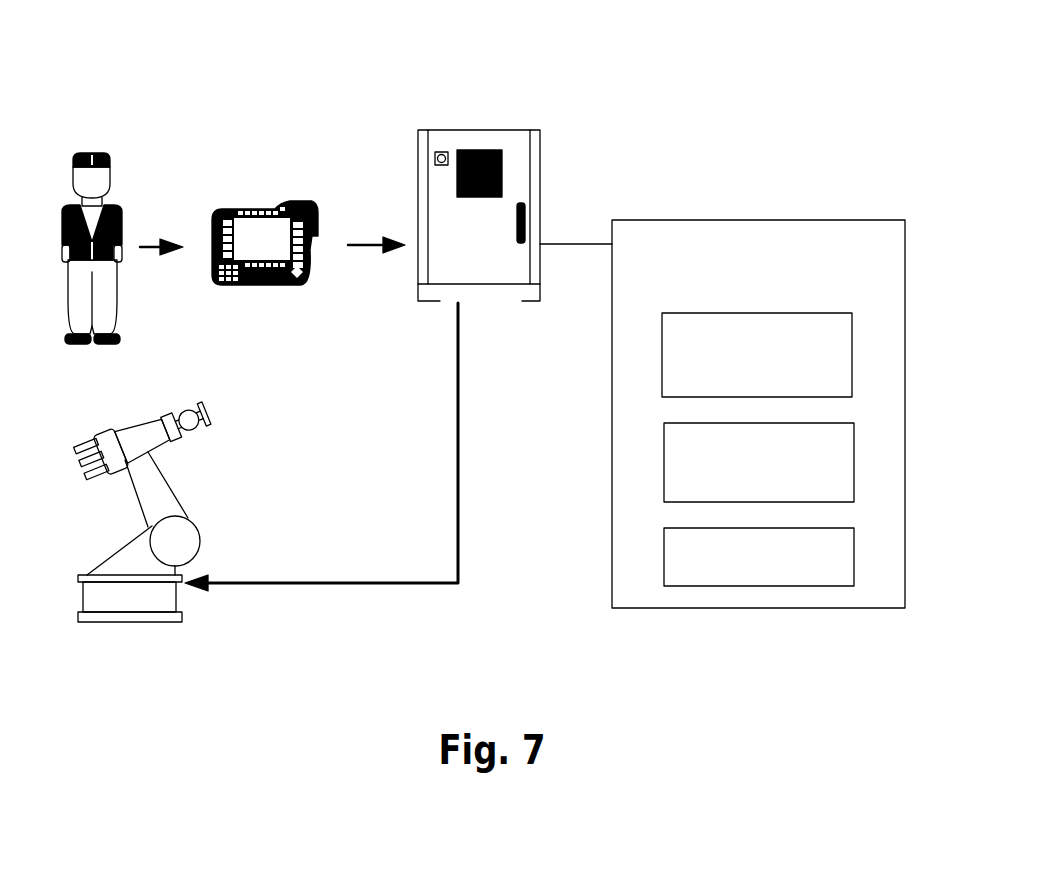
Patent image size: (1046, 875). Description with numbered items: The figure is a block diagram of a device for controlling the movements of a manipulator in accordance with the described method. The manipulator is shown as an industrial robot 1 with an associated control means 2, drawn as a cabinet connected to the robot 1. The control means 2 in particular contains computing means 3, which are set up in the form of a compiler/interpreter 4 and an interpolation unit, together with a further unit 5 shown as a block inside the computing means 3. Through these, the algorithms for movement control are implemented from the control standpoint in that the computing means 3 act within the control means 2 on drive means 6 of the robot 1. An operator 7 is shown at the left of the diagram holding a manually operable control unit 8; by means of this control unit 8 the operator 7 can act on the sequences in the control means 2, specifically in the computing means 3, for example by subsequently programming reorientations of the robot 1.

The industrial robot 1 is at (147, 625).
The control means 2 is at (522, 104).
The computing means 3 is at (641, 358).
The compiler/interpreter 4 is at (858, 363).
The second program module 5 is at (858, 467).
The drive means 6 is at (858, 563).
The operator 7 is at (105, 147).
The manually operable control unit 8 is at (275, 187).